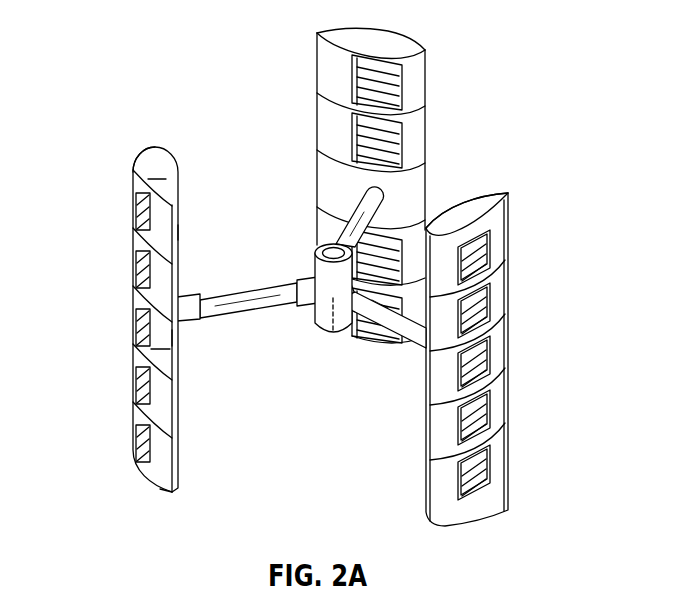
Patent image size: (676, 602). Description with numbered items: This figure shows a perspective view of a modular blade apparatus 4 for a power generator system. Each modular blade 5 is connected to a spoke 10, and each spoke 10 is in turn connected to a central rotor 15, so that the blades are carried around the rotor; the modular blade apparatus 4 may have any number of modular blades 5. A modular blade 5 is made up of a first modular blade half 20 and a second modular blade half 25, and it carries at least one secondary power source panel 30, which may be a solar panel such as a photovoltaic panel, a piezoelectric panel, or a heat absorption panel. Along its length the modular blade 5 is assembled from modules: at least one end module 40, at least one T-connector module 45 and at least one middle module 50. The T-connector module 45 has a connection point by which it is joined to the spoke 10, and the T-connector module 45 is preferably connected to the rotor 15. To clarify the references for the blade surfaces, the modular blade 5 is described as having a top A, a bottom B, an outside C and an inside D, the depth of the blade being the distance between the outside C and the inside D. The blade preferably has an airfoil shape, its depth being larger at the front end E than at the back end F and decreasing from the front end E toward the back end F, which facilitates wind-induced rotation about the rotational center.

The modular blade apparatus 4 is at (155, 300).
The modular blade 5 is at (88, 145).
The spoke 10 is at (257, 284).
The rotor 15 is at (316, 330).
The first modular blade half 20 is at (494, 341).
The second modular blade half 25 is at (477, 218).
The secondary power source panel 30 is at (473, 483).
The end module 40 is at (522, 195).
The T-connector module 45 is at (522, 300).
The middle module 50 is at (522, 360).
The top A is at (157, 166).
The bottom B is at (151, 492).
The outside C is at (160, 335).
The inside D is at (188, 341).
The front end E is at (140, 151).
The back end F is at (179, 233).